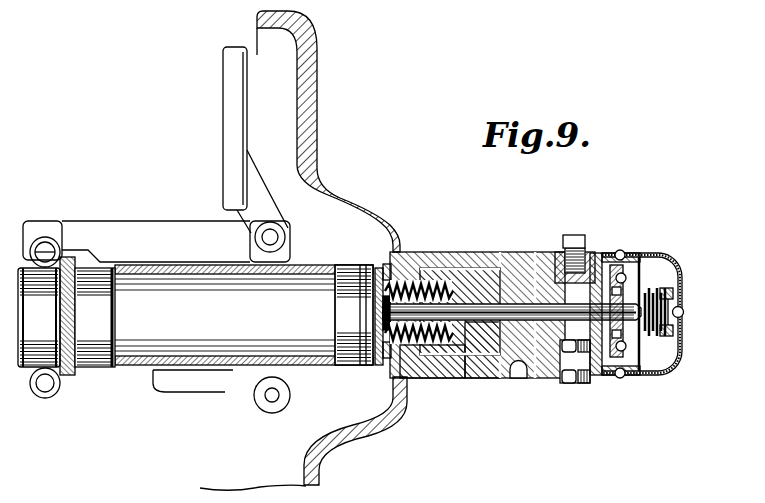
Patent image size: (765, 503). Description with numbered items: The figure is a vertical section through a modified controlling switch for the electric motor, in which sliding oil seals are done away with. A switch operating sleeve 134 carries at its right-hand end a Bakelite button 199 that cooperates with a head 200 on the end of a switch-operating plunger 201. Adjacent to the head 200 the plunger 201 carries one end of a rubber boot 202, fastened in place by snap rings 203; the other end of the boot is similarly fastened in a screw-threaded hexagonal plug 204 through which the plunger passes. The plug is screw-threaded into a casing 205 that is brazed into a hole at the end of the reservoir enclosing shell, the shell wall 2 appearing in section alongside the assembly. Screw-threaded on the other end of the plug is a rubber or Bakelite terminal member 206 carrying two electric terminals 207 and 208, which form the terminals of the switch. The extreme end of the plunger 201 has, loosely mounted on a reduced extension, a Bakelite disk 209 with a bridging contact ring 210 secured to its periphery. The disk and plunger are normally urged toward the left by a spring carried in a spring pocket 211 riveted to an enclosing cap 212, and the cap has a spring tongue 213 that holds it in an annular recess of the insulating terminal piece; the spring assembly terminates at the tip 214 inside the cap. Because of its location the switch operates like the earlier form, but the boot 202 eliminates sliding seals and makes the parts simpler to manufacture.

The bracket 2 is at (356, 202).
The switch operating sleeve 134 is at (212, 358).
The Bakelite button 199 is at (343, 368).
The head 200 is at (413, 251).
The switch-operating plunger 201 is at (458, 311).
The rubber boot 202 is at (460, 276).
The snap rings 203 is at (382, 349).
The screw-threaded hexagonal plug 204 is at (488, 345).
The casing 205 is at (442, 363).
The terminal member 206 is at (548, 379).
The electric terminal 207 is at (588, 248).
The electric terminal 208 is at (582, 384).
The Bakelite disk 209 is at (627, 356).
The bridging contact ring 210 is at (603, 252).
The spring pocket 211 is at (667, 295).
The enclosing cap 212 is at (681, 349).
The spring tongue 213 is at (622, 253).
The tip 214 is at (655, 327).